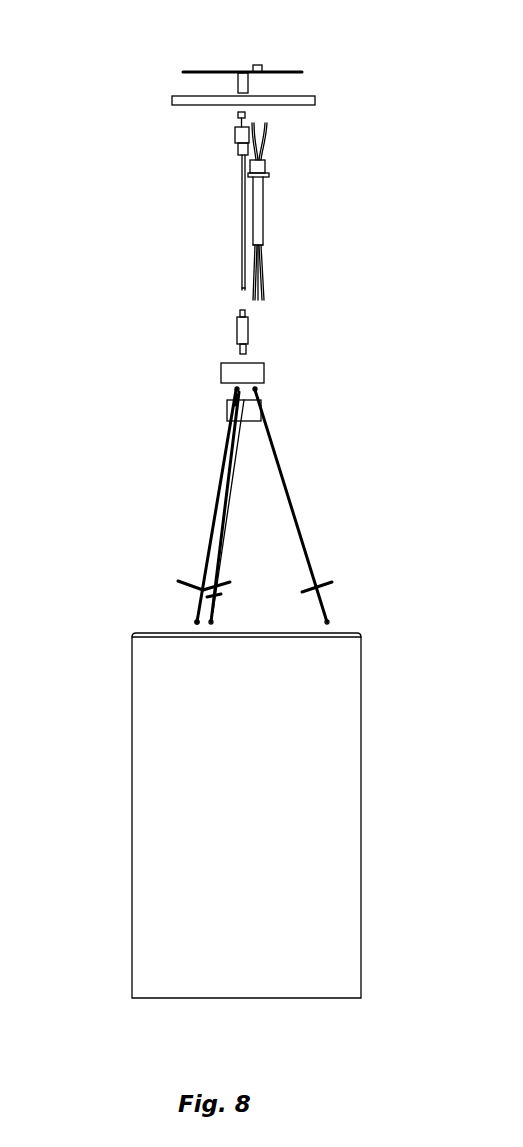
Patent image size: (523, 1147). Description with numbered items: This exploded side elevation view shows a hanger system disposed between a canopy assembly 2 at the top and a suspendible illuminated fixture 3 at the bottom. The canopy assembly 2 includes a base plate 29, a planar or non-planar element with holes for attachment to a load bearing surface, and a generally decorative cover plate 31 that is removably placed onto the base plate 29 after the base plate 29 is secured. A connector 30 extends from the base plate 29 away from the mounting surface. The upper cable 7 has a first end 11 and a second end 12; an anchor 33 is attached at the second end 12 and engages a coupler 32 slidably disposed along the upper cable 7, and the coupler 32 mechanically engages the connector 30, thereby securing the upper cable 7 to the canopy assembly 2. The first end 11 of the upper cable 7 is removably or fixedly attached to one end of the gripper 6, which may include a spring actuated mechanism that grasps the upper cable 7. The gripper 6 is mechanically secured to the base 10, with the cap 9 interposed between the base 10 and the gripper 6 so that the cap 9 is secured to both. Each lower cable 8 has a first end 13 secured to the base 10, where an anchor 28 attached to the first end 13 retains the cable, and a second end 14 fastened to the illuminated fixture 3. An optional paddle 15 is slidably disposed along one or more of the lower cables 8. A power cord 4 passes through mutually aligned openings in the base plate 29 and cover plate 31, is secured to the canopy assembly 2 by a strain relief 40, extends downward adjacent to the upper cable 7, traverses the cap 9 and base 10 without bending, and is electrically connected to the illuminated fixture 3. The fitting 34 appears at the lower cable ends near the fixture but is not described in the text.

The canopy assembly 2 is at (124, 57).
The illuminated fixture 3 is at (245, 793).
The power cord 4 is at (263, 238).
The gripper 6 is at (237, 331).
The upper cable 7 is at (242, 237).
The lower cable 8 is at (303, 530).
The cap 9 is at (230, 365).
The base 10 is at (258, 410).
The first end 11 is at (242, 287).
The second end 12 is at (247, 115).
The first end 13 is at (236, 391).
The second end 14 is at (198, 624).
The paddle 15 is at (181, 582).
The anchor 28 is at (235, 405).
The base plate 29 is at (222, 71).
The connector 30 is at (245, 70).
The cover plate 31 is at (315, 99).
The coupler 32 is at (237, 150).
The anchor 33 is at (236, 115).
The sling end fitting 34 is at (193, 622).
The strain relief 40 is at (268, 171).